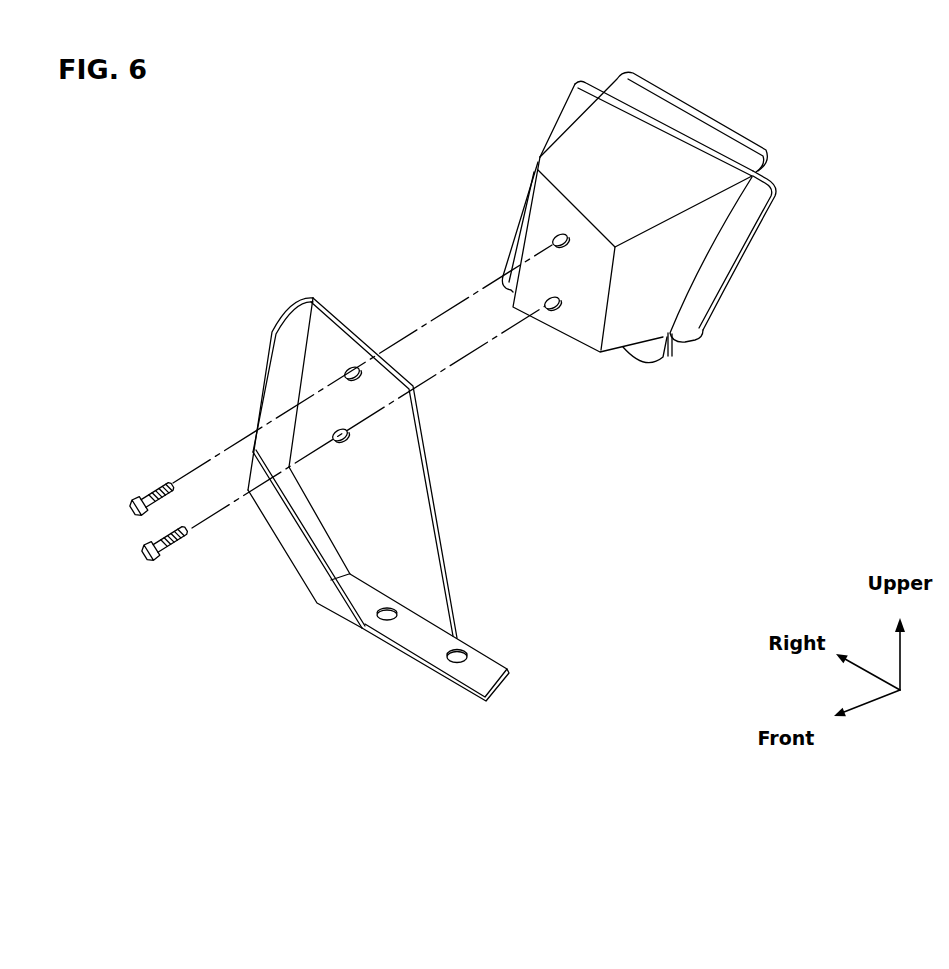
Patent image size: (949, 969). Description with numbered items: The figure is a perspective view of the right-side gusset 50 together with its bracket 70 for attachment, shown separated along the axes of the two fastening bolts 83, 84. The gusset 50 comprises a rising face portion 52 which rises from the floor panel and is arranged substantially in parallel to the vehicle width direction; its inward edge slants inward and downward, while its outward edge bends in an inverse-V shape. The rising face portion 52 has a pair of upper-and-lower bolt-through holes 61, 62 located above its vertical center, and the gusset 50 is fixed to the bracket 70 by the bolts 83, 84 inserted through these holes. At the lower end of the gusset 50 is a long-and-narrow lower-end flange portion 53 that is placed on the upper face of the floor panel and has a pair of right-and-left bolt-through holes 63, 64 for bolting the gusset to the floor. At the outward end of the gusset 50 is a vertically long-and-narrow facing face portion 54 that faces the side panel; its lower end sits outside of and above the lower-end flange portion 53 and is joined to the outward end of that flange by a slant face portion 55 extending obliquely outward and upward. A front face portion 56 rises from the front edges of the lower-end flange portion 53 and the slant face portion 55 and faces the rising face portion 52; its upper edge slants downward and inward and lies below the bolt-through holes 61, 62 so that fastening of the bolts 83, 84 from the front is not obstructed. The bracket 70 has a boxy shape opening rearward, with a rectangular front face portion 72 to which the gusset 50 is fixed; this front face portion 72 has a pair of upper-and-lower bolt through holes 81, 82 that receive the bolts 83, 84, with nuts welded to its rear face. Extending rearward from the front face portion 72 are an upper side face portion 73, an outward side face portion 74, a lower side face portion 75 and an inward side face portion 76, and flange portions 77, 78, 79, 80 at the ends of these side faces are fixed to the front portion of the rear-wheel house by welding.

The gusset 50 is at (270, 300).
The rising face portion 52 is at (413, 495).
The lower-end flange portion 53 is at (430, 630).
The facing face portion 54 is at (285, 357).
The slant face portion 55 is at (302, 500).
The front face portion 56 is at (303, 573).
The bolt-through hole 61 is at (348, 366).
The bolt-through hole 62 is at (348, 434).
The bolt-through hole 63 is at (463, 652).
The bolt-through hole 64 is at (390, 608).
The bracket 70 is at (490, 110).
The front face portion 72 is at (583, 317).
The upper side face portion 73 is at (637, 125).
The outward side face portion 74 is at (510, 255).
The lower side face portion 75 is at (645, 347).
The inward side face portion 76 is at (677, 275).
The flange portion 77 is at (720, 128).
The flange portion 78 is at (574, 100).
The flange portion 79 is at (670, 352).
The flange portion 80 is at (757, 207).
The bolt through hole 81 is at (558, 233).
The bolt through hole 82 is at (552, 312).
The bolt 83 is at (133, 513).
The bolt 84 is at (150, 560).